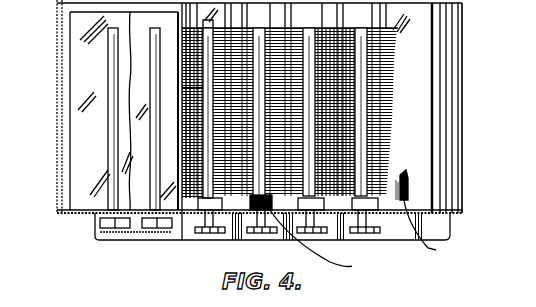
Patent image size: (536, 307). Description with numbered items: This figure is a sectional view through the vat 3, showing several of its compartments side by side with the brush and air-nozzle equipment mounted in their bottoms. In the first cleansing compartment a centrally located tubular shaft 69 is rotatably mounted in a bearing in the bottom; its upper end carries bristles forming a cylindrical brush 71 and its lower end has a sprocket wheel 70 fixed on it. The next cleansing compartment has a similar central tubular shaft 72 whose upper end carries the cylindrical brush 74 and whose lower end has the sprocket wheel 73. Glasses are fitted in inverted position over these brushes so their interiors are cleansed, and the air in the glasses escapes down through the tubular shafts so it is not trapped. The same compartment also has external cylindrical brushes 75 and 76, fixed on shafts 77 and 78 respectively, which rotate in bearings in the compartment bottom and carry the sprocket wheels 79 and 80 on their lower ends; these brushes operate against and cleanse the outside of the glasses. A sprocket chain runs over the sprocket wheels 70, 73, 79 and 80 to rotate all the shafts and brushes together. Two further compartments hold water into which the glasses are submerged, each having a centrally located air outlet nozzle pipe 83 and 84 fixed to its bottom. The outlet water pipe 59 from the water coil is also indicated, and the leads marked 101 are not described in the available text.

The vat 3 is at (464, 120).
The outlet water pipe 59 is at (50, 8).
The tubular shaft 69 is at (365, 186).
The sprocket wheel 70 is at (382, 234).
The cylindrical brush 71 is at (379, 90).
The tubular shaft 72 is at (259, 32).
The sprocket wheel 73 is at (262, 212).
The cylindrical brush 74 is at (246, 198).
The external cylindrical brush 75 is at (203, 36).
The external cylindrical brush 76 is at (318, 34).
The shaft 77 is at (182, 88).
The shaft 78 is at (340, 58).
The sprocket wheel 79 is at (210, 234).
The sprocket wheel 80 is at (310, 234).
The air outlet nozzle pipe 83 is at (155, 170).
The air outlet nozzle pipe 84 is at (108, 135).
The lead wire 101 is at (369, 236).